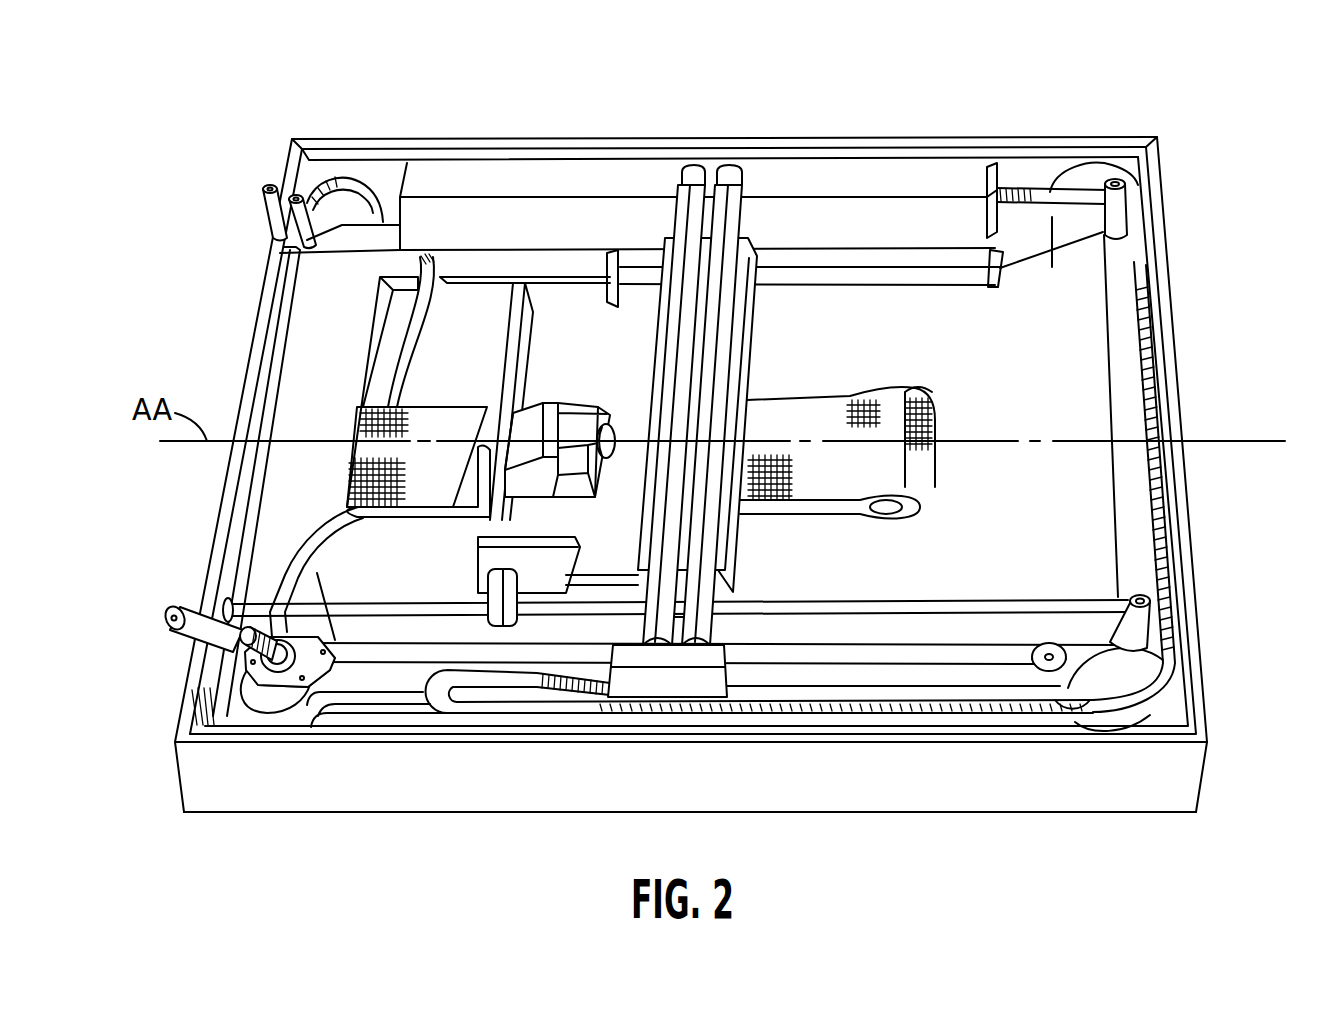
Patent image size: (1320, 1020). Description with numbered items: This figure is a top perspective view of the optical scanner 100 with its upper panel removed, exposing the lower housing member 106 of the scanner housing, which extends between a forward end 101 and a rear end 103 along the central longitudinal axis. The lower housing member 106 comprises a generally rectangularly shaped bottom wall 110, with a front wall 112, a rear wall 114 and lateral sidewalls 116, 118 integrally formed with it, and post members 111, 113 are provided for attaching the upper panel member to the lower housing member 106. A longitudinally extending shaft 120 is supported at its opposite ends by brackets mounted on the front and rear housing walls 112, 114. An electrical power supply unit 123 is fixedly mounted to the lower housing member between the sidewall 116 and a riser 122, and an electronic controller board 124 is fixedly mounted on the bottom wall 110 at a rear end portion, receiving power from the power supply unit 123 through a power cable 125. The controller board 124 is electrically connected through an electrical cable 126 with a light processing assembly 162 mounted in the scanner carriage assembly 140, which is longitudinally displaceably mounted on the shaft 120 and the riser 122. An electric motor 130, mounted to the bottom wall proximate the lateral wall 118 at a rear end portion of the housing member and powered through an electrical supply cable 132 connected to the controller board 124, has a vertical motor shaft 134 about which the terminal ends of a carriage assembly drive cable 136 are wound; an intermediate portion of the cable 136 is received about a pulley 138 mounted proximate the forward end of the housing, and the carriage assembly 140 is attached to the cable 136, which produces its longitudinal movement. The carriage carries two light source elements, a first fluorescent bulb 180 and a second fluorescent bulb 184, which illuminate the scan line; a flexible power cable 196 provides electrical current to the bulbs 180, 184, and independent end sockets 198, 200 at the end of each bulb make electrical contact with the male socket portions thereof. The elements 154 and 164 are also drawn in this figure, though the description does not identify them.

The optical scanner 100 is at (1115, 832).
The forward end 101 is at (1193, 525).
The rear end 103 is at (220, 497).
The lower housing member 106 is at (1170, 250).
The bottom wall 110 is at (1095, 380).
The post member 111 is at (1112, 185).
The front wall 112 is at (1174, 300).
The post member 113 is at (1150, 598).
The rear wall 114 is at (252, 370).
The lateral sidewall 116 is at (350, 140).
The lateral sidewall 118 is at (470, 797).
The shaft 120 is at (952, 600).
The riser 122 is at (440, 252).
The electrical power supply unit 123 is at (963, 165).
The electronic controller board 124 is at (430, 417).
The power cable 125 is at (420, 320).
The electrical cable 126 is at (458, 497).
The electric motor 130 is at (275, 705).
The electrical supply cable 132 is at (280, 563).
The vertical motor shaft 134 is at (248, 645).
The carriage assembly drive cable 136 is at (375, 665).
The pulley 138 is at (1040, 645).
The scanner carriage assembly 140 is at (753, 360).
The drive nut 154 is at (485, 597).
The light processing assembly 162 is at (550, 400).
The knob 164 is at (615, 433).
The first fluorescent bulb 180 is at (744, 220).
The second fluorescent bulb 184 is at (678, 220).
The flexible power cable 196 is at (1170, 670).
The end socket 198 is at (742, 180).
The end socket 200 is at (680, 180).